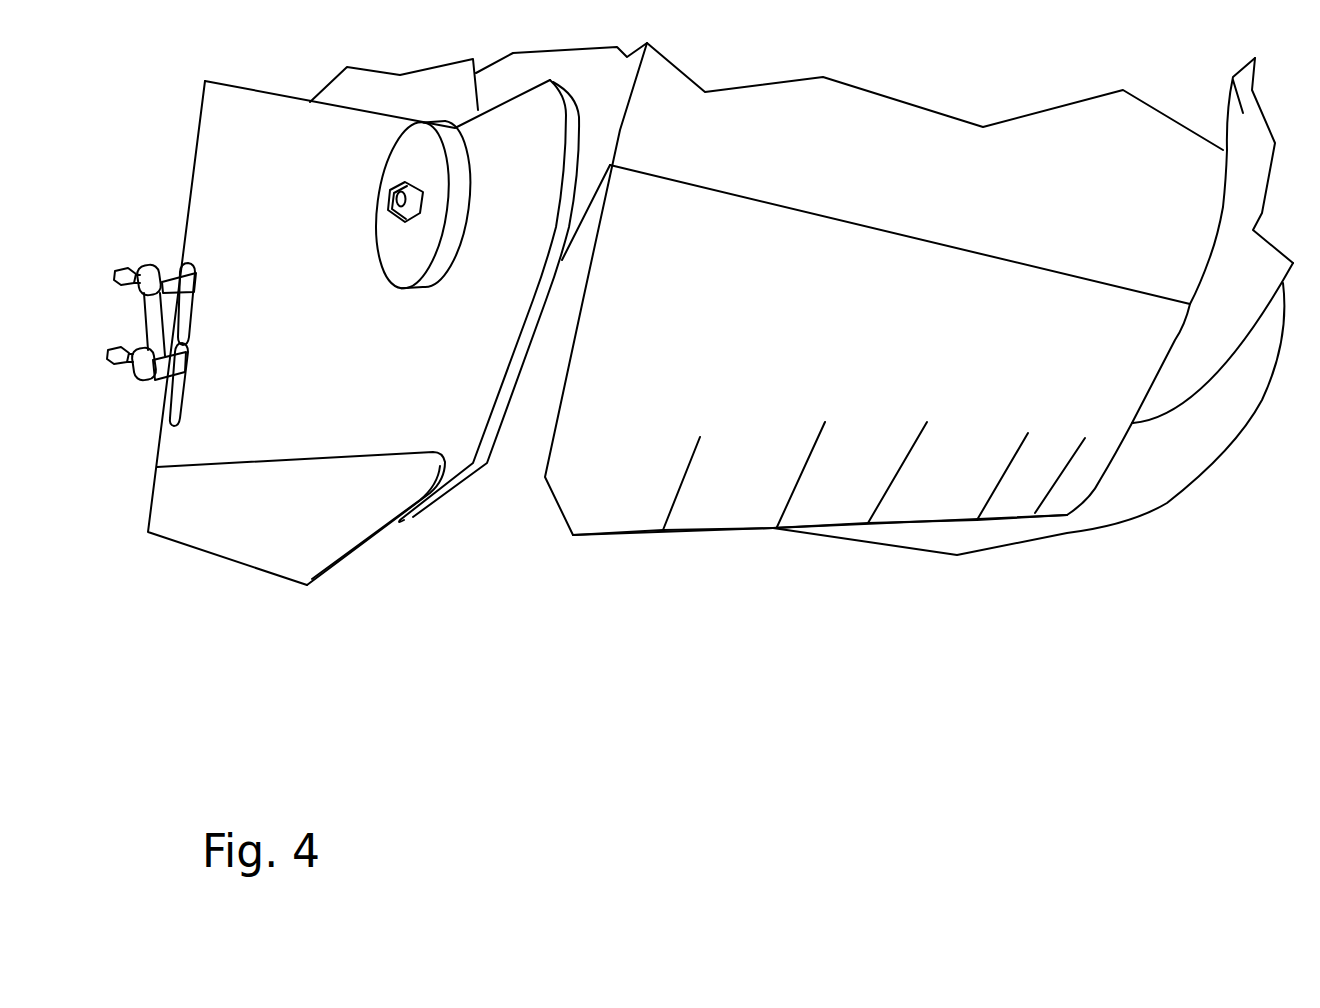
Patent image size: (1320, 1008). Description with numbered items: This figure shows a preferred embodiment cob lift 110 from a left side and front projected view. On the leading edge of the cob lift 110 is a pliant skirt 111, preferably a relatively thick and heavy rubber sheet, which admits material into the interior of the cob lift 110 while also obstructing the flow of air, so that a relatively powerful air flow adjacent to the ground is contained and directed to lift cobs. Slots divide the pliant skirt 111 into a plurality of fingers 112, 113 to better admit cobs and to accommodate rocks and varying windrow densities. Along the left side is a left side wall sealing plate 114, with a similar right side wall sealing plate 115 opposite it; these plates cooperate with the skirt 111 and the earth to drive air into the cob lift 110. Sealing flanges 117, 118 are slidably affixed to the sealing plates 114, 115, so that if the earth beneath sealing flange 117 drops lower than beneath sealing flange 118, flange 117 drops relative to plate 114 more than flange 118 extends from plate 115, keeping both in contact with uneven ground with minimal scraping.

The cob lift 110 is at (700, 368).
The pliant skirt 111 is at (919, 342).
The finger 112 is at (650, 487).
The finger 113 is at (765, 487).
The left side wall sealing plate 114 is at (455, 338).
The right side wall sealing plate 115 is at (1233, 78).
The sealing flange 117 is at (327, 545).
The sealing flange 118 is at (1137, 473).